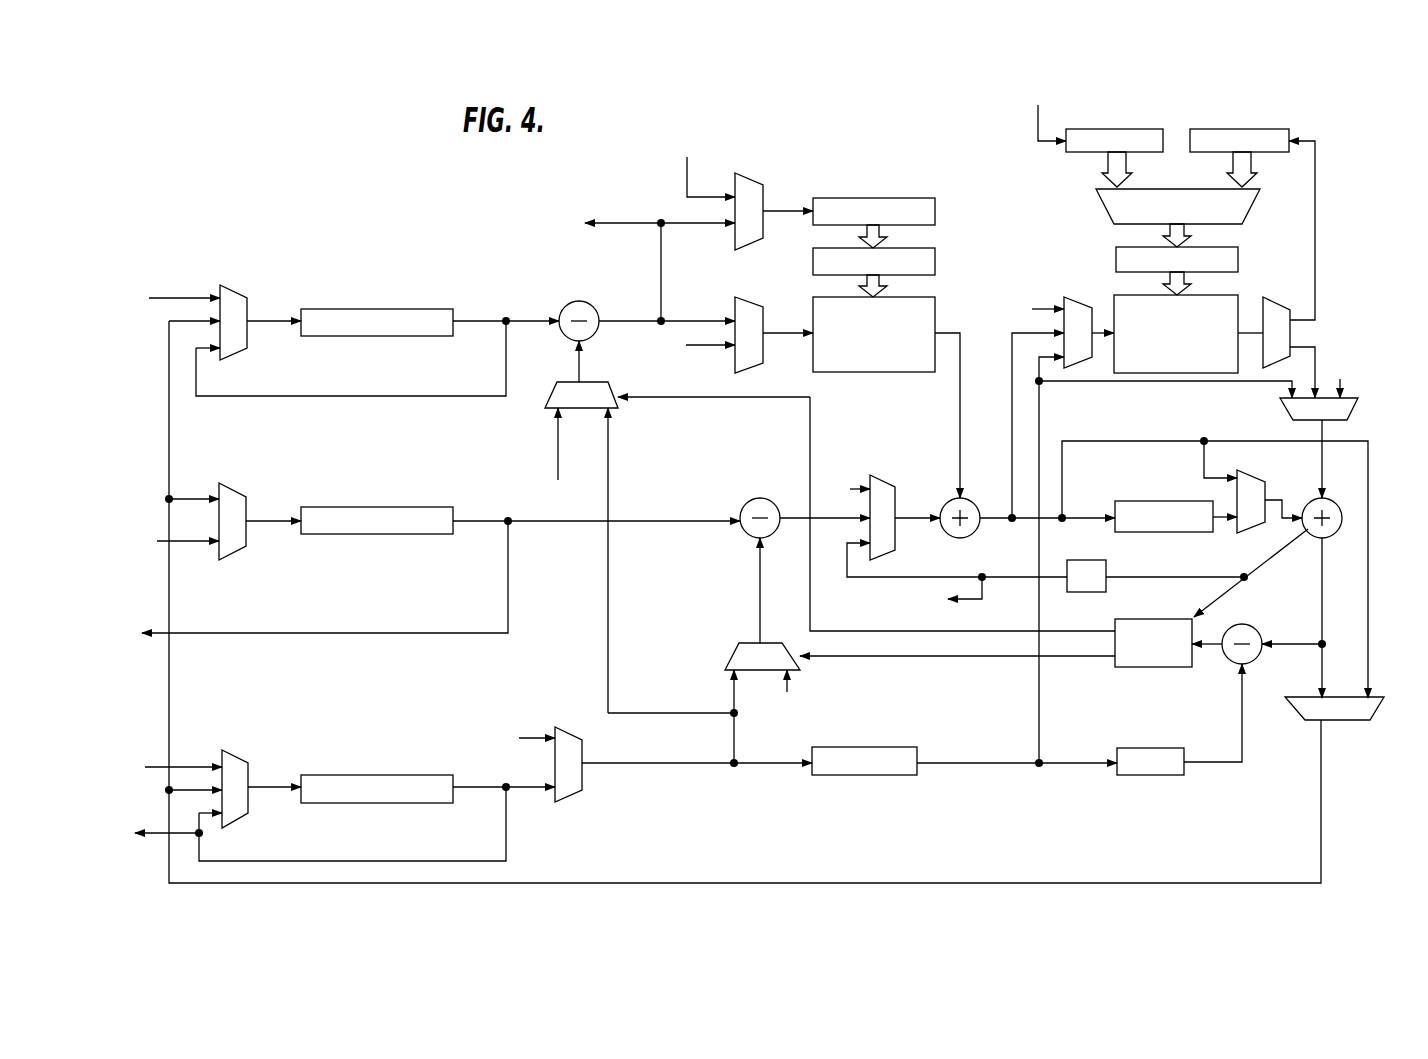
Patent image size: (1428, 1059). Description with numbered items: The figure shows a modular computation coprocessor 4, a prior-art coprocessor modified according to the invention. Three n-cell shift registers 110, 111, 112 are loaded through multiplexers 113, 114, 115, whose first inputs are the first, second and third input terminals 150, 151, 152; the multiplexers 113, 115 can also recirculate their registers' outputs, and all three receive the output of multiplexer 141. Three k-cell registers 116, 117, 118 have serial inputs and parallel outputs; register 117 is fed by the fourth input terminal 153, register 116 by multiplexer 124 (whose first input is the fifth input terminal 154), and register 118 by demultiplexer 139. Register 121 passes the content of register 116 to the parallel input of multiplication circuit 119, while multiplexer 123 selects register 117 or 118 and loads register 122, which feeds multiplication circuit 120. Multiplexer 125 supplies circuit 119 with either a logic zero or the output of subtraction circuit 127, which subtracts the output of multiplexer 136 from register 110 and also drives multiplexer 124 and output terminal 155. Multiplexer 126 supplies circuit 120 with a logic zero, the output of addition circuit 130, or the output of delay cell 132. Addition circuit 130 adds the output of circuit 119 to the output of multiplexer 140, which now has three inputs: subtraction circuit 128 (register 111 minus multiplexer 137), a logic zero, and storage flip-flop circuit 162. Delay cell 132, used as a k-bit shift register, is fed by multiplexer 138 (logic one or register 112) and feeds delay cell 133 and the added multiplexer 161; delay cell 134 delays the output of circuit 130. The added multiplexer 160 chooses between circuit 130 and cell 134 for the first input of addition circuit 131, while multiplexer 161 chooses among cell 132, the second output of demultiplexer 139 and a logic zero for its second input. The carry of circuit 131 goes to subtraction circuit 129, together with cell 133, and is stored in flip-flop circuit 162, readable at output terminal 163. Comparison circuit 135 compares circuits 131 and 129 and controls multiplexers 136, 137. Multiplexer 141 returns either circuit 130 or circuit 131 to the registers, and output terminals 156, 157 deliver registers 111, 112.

The coprocessor 4 is at (428, 190).
The shift register 110 is at (366, 308).
The shift register 111 is at (370, 535).
The shift register 112 is at (373, 775).
The multiplexer 113 is at (240, 287).
The multiplexer 114 is at (238, 553).
The multiplexer 115 is at (238, 752).
The k-cell register 116 is at (936, 211).
The k-cell register 117 is at (1134, 128).
The k-cell register 118 is at (1250, 128).
The multiplication circuit 119 is at (897, 373).
The multiplication circuit 120 is at (1230, 296).
The register 121 is at (936, 261).
The register 122 is at (1238, 259).
The multiplexer 123 is at (1250, 213).
The multiplexer 124 is at (748, 179).
The multiplexer 125 is at (748, 297).
The multiplexer 126 is at (1077, 297).
The subtraction circuit 127 is at (578, 300).
The subtraction circuit 128 is at (765, 498).
The subtraction circuit 129 is at (1250, 624).
The addition circuit 130 is at (974, 503).
The addition circuit 131 is at (1341, 523).
The delay cell 132 is at (866, 775).
The delay cell 133 is at (1153, 775).
The delay cell 134 is at (1148, 501).
The comparison circuit 135 is at (1148, 668).
The multiplexer 136 is at (550, 396).
The multiplexer 137 is at (730, 656).
The multiplexer 138 is at (573, 795).
The demultiplexer 139 is at (1290, 334).
The multiplexer 140 is at (882, 475).
The multiplexer 141 is at (1377, 712).
The first input terminal 150 is at (176, 297).
The second input terminal 151 is at (198, 543).
The third input terminal 152 is at (157, 765).
The fourth input terminal 153 is at (1037, 128).
The fifth input terminal 154 is at (687, 170).
The output terminal 155 is at (612, 222).
The output terminal 156 is at (167, 634).
The output terminal 157 is at (155, 838).
The multiplexer 160 is at (1249, 471).
The multiplexer 161 is at (1352, 409).
The storage flip-flop circuit 162 is at (1107, 590).
The output terminal 163 is at (983, 599).